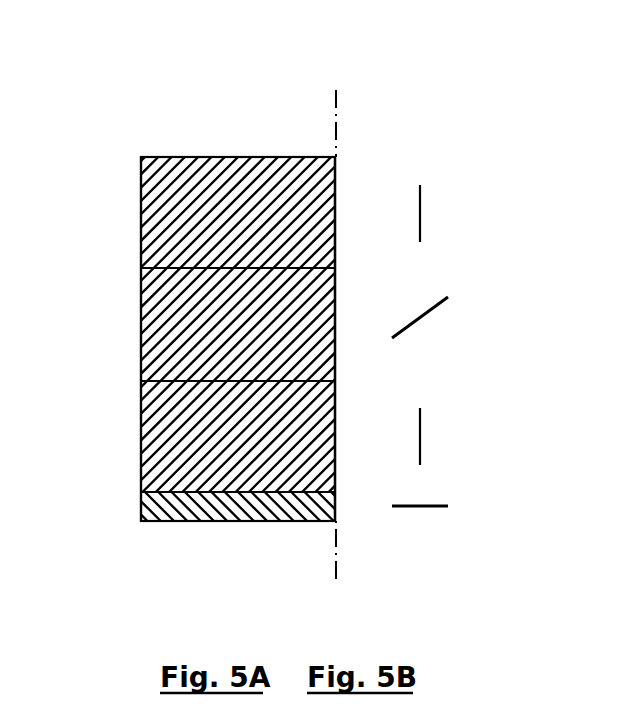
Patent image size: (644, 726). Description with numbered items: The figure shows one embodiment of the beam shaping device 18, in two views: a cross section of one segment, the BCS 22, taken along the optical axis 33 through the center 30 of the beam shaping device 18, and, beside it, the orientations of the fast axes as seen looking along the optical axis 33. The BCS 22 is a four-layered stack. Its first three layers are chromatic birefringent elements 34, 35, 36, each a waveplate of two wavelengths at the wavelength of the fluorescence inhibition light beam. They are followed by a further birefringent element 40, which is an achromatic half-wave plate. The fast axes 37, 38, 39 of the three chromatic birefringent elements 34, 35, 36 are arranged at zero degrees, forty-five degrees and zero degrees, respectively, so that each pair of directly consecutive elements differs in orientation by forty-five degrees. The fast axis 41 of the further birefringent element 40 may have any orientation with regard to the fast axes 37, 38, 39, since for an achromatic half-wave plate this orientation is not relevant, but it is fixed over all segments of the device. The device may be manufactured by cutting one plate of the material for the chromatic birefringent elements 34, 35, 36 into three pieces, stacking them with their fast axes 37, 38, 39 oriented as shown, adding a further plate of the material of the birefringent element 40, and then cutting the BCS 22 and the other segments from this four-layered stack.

In FIG. 5A, the beam shaping device 18 is at (190, 128).
In FIG. 5A, the BCS 22 is at (131, 151).
In FIG. 5A, the center 30 is at (337, 155).
In FIG. 5A, the optical axis 33 is at (334, 110).
In FIG. 5A, the chromatic birefringent element 34 is at (150, 215).
In FIG. 5A, the chromatic birefringent element 35 is at (150, 325).
In FIG. 5A, the chromatic birefringent element 36 is at (148, 430).
In FIG. 5B, the fast axis 37 is at (420, 213).
In FIG. 5B, the fast axis 38 is at (423, 315).
In FIG. 5B, the fast axis 39 is at (420, 433).
In FIG. 5A, the further birefringent element 40 is at (147, 508).
In FIG. 5B, the fast axis 41 is at (427, 506).